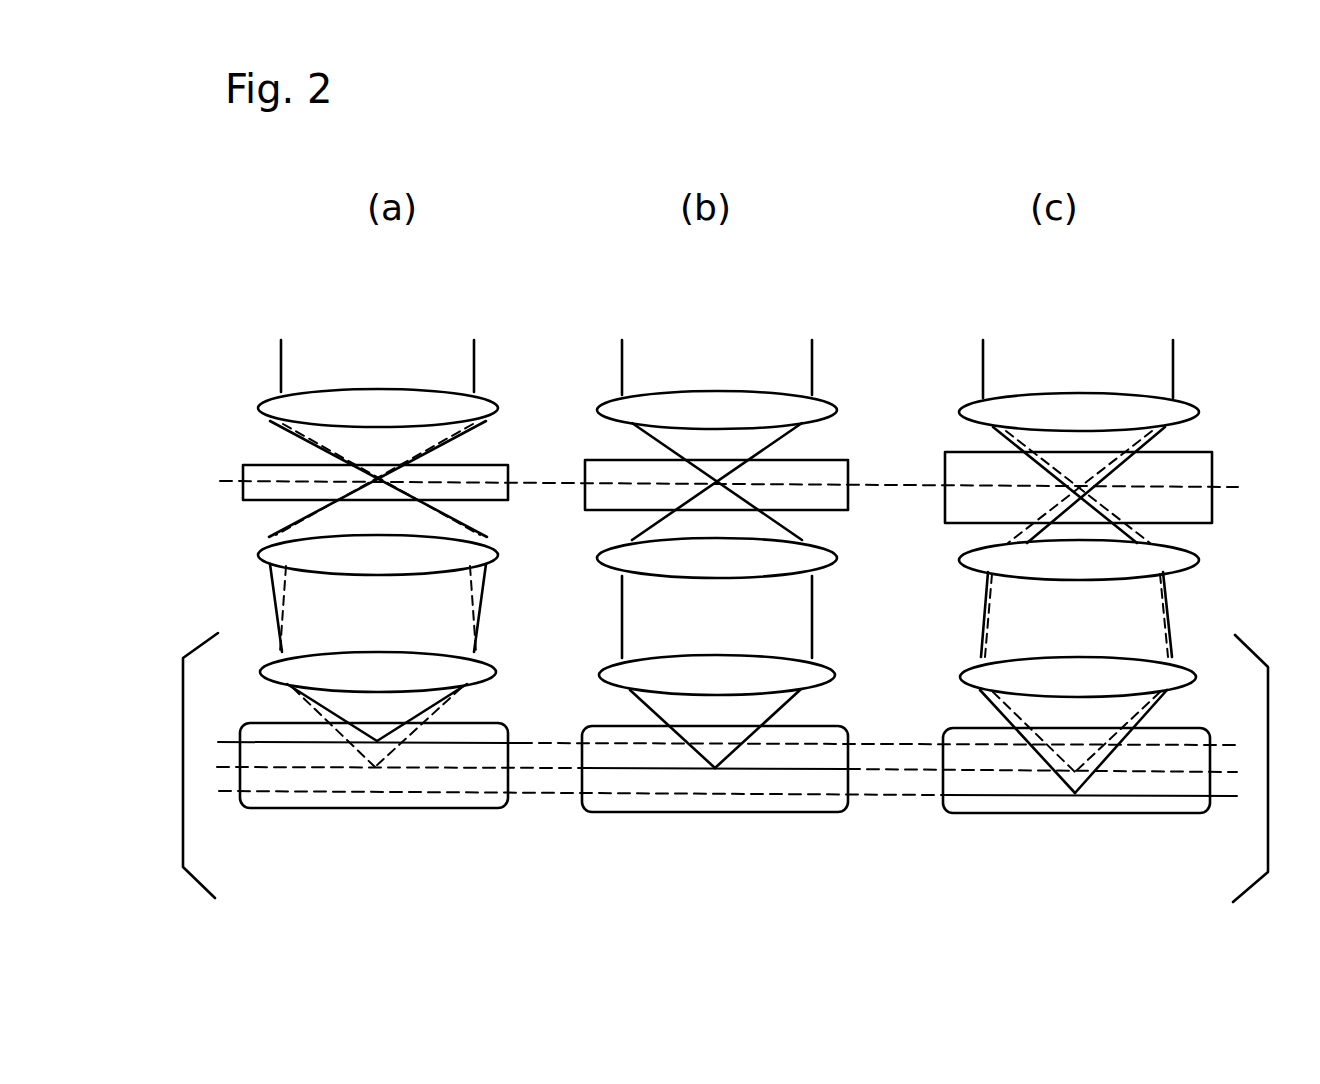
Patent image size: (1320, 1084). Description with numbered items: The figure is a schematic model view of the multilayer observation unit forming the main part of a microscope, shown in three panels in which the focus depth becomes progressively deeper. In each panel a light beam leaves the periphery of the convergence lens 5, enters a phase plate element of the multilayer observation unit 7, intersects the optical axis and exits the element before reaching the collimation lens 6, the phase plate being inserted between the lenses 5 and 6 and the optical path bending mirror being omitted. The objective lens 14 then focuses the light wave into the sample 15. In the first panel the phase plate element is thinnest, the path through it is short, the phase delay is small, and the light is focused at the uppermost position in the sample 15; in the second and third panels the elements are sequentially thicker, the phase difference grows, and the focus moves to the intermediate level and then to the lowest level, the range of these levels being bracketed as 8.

The convergence lens 5 is at (258, 408).
The collimation lens 6 is at (258, 555).
The multilayer observation unit 7 is at (257, 465).
The objective lens 14 is at (260, 672).
The sample 15 is at (375, 808).
The focal position range (Z1-Z3) 8 is at (182, 760).